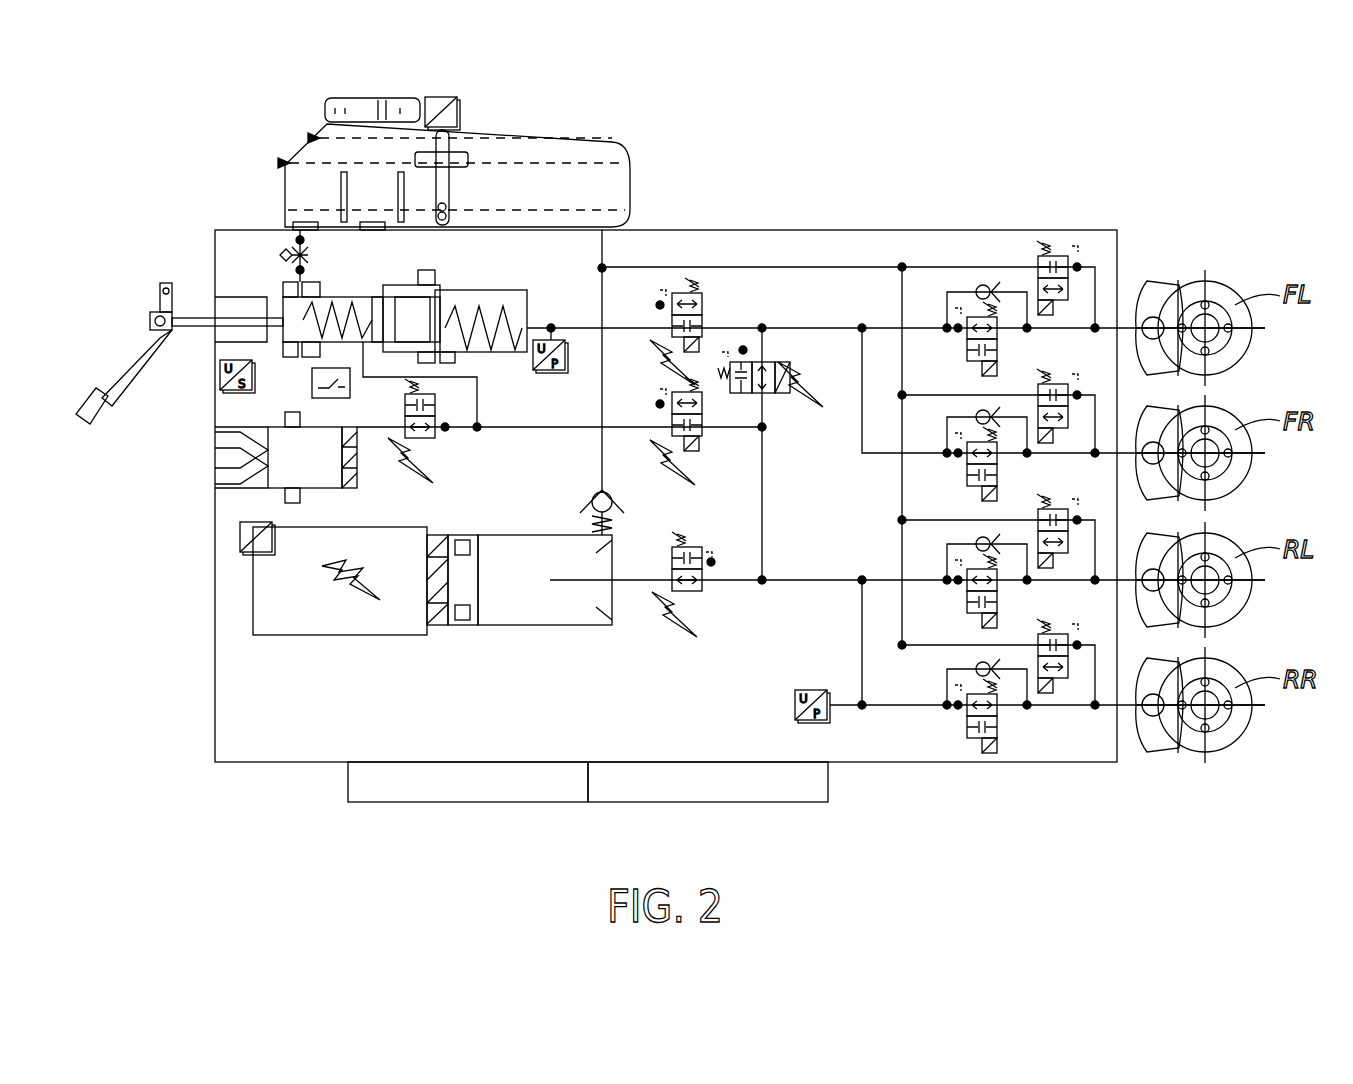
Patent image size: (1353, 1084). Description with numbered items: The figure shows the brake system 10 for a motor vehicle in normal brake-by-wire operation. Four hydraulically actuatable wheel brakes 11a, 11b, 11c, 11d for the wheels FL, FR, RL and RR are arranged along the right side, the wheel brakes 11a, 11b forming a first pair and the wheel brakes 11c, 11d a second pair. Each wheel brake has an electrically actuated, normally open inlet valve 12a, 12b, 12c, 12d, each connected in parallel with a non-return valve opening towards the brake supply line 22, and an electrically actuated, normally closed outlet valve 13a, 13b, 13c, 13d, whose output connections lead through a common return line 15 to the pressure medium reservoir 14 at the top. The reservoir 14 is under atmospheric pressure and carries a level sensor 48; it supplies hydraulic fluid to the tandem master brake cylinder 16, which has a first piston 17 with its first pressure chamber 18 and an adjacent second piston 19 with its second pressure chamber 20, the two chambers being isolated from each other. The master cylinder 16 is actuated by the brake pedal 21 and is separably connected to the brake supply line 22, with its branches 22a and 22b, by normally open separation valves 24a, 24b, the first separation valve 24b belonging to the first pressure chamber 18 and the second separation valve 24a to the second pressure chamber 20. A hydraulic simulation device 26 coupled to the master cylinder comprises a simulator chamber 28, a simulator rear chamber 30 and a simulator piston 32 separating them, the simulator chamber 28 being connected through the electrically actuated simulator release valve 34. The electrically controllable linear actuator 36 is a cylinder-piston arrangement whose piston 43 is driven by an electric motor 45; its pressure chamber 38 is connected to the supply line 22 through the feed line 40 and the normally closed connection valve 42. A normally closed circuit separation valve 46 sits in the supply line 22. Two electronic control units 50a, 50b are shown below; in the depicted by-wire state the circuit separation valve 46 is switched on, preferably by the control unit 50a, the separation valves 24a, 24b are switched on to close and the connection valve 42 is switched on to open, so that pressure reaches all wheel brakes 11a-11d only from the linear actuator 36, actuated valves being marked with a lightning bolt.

The brake system 10 is at (833, 182).
The wheel brake 11a is at (1160, 300).
The wheel brake 11b is at (1148, 430).
The wheel brake 11c is at (1148, 556).
The wheel brake 11d is at (1148, 683).
The inlet valve 12a is at (966, 342).
The inlet valve 12b is at (966, 467).
The inlet valve 12c is at (966, 594).
The inlet valve 12d is at (966, 720).
The outlet valve 13a is at (1053, 255).
The outlet valve 13b is at (1053, 385).
The outlet valve 13c is at (1053, 510).
The outlet valve 13d is at (1053, 636).
The pressure medium reservoir 14 is at (648, 182).
The common return line 15 is at (718, 265).
The tandem master brake cylinder 16 is at (484, 285).
The first piston 17 is at (277, 305).
The first pressure chamber 18 is at (348, 305).
The second piston 19 is at (402, 300).
The second pressure chamber 20 is at (497, 362).
The brake pedal 21 is at (137, 348).
The brake supply line 22 is at (765, 508).
The brake supply line branch 22a is at (828, 326).
The brake supply line branch 22b is at (825, 578).
The second separation valve 24a is at (705, 315).
The first separation valve 24b is at (700, 455).
The simulation device 26 is at (302, 491).
The simulator chamber 28 is at (353, 490).
The simulator rear chamber 30 is at (224, 492).
The simulator piston 32 is at (288, 505).
The simulator release valve 34 is at (440, 438).
The electrically controllable linear actuator 36 is at (453, 612).
The pressure chamber 38 is at (530, 628).
The feed line 40 is at (622, 588).
The connection valve 42 is at (695, 597).
The piston 43 is at (466, 583).
The electric motor 45 is at (305, 638).
The circuit separation valve 46 is at (742, 396).
The fluid level sensor 48 is at (462, 145).
The electronic control unit 50a is at (770, 805).
The electronic control unit 50b is at (440, 805).